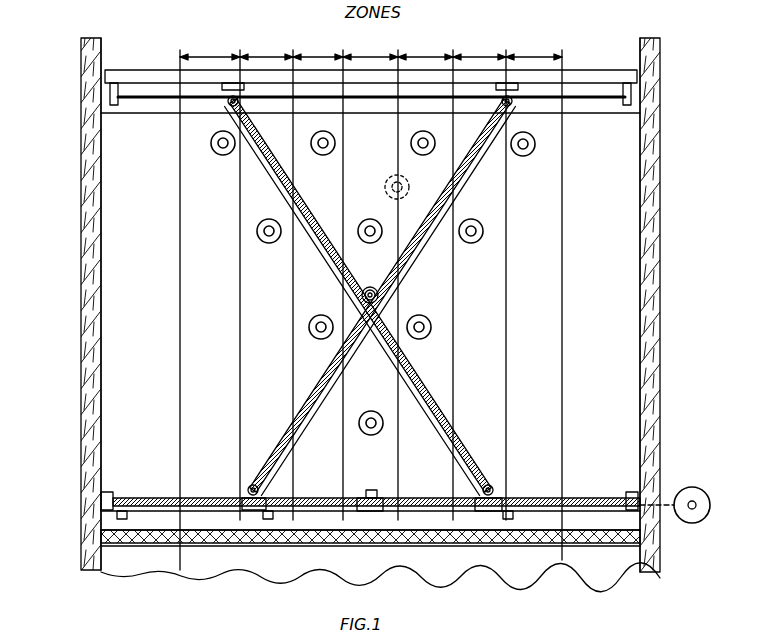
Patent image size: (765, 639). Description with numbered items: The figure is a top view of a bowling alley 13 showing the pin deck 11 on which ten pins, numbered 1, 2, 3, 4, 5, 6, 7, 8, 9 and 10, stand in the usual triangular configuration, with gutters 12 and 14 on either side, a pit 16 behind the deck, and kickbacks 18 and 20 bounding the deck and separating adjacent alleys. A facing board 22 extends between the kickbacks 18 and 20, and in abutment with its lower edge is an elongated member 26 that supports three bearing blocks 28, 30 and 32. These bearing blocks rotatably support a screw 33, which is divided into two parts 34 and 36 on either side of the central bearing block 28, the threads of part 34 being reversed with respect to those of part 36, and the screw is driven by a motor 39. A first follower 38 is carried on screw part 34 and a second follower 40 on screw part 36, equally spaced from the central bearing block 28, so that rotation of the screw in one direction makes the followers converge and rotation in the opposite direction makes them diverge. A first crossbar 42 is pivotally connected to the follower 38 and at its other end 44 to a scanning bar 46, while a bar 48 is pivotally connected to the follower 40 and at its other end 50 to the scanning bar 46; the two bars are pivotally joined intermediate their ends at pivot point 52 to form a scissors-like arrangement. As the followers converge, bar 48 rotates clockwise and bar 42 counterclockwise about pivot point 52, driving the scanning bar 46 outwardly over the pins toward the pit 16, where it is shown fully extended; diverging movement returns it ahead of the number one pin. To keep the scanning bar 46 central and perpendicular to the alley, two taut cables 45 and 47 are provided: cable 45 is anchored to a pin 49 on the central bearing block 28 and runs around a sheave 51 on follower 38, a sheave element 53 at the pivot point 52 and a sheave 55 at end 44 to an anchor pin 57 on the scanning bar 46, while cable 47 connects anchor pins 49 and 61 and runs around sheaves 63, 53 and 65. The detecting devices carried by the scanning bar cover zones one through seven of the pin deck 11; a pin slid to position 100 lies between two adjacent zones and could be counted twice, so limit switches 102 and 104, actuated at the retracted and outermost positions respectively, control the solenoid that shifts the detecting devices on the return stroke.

The pin 1 is at (370, 435).
The pin 2 is at (310, 334).
The pin 3 is at (424, 338).
The pin 4 is at (262, 243).
The pin 5 is at (362, 218).
The pin 6 is at (470, 243).
The pin 7 is at (216, 154).
The pin 8 is at (318, 154).
The pin 9 is at (423, 155).
The pin 10 is at (520, 156).
The pin deck 11 is at (330, 112).
The gutter 12 is at (168, 372).
The bowling alley 13 is at (230, 578).
The gutter 14 is at (566, 366).
The pit 16 is at (372, 108).
The kickback 18 is at (82, 366).
The kickback 20 is at (650, 386).
The facing board 22 is at (345, 540).
The elongated member 26 is at (392, 536).
The bearing block 28 is at (376, 492).
The bearing block 30 is at (102, 500).
The bearing block 32 is at (632, 490).
The screw 33 is at (192, 496).
The screw part 34 is at (165, 512).
The screw part 36 is at (510, 514).
The first follower 38 is at (242, 500).
The motor 39 is at (697, 488).
The second follower 40 is at (486, 508).
The first crossbar 42 is at (310, 385).
The end of first crossbar 44 is at (513, 102).
The cable 45 is at (330, 497).
The scanning bar 46 is at (412, 92).
The cable 47 is at (447, 496).
The bar 48 is at (432, 384).
The pin 49 is at (366, 492).
The end of bar 50 is at (240, 100).
The sheave 51 is at (246, 478).
The pivot point 52 is at (380, 294).
The sheave element 53 is at (362, 288).
The sheave 55 is at (503, 100).
The anchor pin 57 is at (631, 100).
The anchor pin 61 is at (110, 95).
The sheave 63 is at (494, 486).
The sheave 65 is at (229, 100).
The pin position 100 is at (395, 175).
The limit switch 102 is at (118, 518).
The limit switch 104 is at (255, 542).